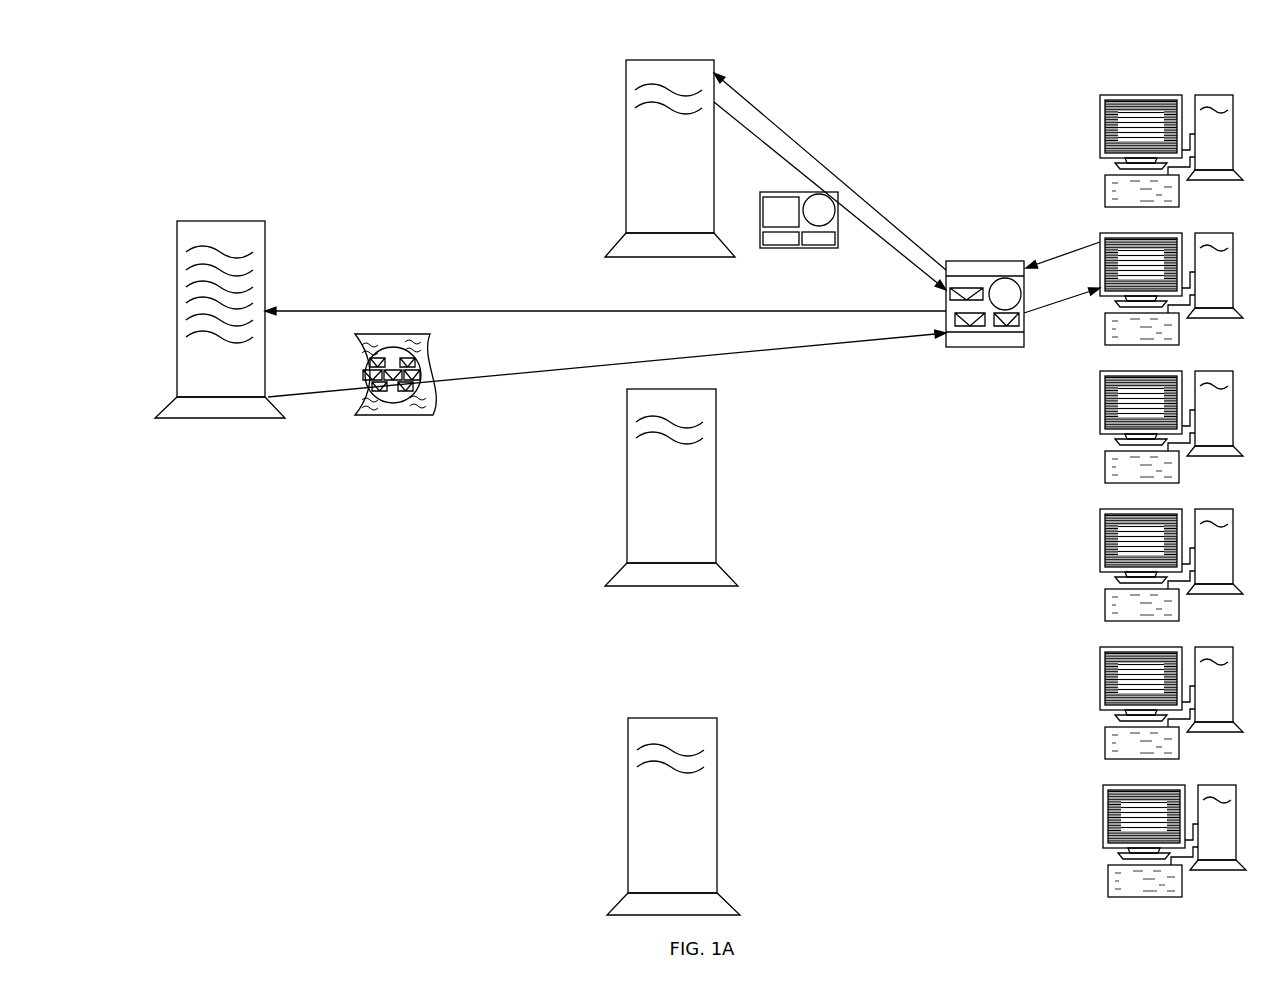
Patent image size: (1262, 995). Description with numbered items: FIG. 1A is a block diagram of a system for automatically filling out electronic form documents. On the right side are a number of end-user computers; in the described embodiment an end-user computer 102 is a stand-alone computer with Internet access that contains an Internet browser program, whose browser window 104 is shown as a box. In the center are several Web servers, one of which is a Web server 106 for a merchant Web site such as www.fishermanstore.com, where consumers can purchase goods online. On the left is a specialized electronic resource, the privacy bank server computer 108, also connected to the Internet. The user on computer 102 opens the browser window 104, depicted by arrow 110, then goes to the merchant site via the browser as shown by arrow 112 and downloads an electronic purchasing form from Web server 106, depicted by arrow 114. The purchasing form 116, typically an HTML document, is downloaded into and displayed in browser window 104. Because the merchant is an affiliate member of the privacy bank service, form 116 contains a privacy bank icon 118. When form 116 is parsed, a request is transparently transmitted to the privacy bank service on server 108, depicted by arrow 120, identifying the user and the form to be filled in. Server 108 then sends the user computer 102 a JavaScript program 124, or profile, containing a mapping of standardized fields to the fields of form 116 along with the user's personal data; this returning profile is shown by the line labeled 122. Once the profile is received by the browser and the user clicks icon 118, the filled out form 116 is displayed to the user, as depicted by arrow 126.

The end-user computer 102 is at (1210, 319).
The browser window 104 is at (1015, 321).
The Web server 106 is at (670, 257).
The privacy bank server computer 108 is at (220, 348).
The arrow 110 is at (1078, 249).
The arrow 112 is at (934, 249).
The arrow 114 is at (870, 239).
The purchasing form 116 is at (775, 192).
The privacy bank icon 118 is at (1021, 298).
The arrow 120 is at (475, 310).
The message from privacy bank server 122 is at (505, 373).
The JavaScript program 124 is at (432, 338).
The arrow 126 is at (1068, 299).